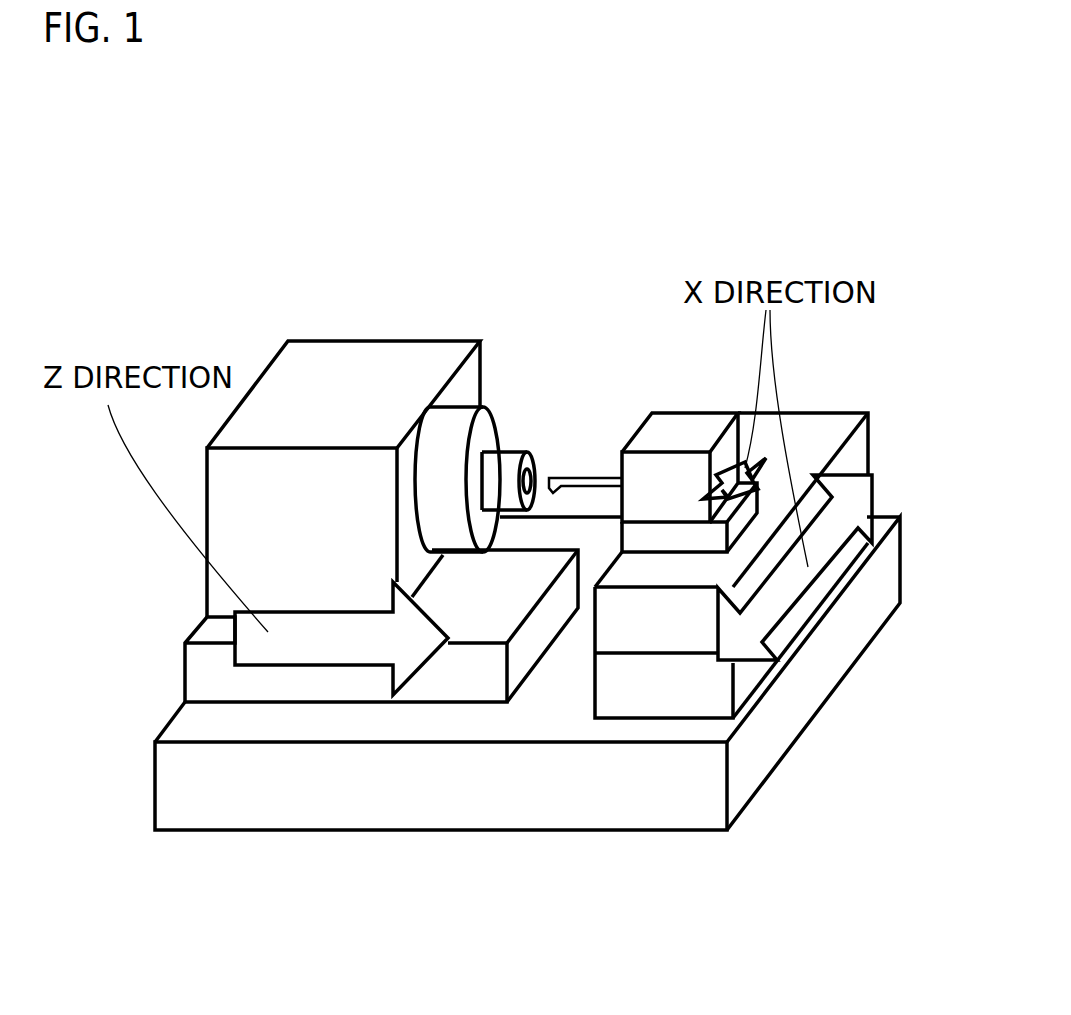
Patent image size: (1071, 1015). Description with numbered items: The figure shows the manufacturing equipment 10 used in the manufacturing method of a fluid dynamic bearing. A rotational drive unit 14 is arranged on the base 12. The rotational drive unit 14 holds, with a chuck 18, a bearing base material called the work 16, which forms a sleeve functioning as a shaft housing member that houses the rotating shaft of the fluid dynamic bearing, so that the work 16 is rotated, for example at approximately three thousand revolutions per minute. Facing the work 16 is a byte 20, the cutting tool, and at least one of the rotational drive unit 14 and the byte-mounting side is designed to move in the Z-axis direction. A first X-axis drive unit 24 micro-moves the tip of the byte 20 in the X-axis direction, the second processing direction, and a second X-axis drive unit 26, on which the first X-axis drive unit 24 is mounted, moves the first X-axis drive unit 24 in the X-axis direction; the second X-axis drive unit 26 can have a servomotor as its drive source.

The manufacturing equipment 10 is at (705, 225).
The base 12 is at (177, 783).
The rotational drive unit 14 is at (360, 372).
The work 16 is at (518, 450).
The chuck 18 is at (463, 420).
The byte 20 is at (587, 477).
The first X-axis drive unit 24 is at (690, 430).
The second X-axis drive unit 26 is at (822, 445).